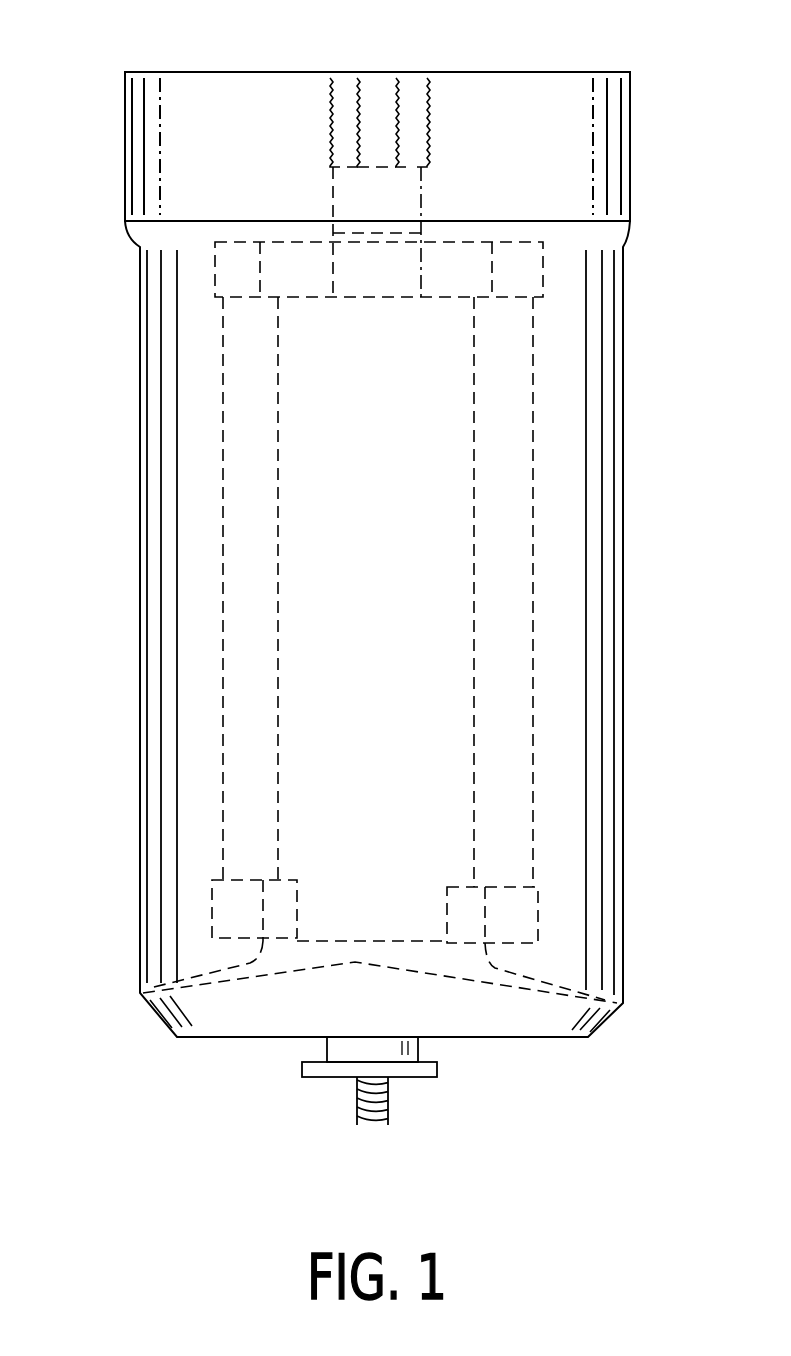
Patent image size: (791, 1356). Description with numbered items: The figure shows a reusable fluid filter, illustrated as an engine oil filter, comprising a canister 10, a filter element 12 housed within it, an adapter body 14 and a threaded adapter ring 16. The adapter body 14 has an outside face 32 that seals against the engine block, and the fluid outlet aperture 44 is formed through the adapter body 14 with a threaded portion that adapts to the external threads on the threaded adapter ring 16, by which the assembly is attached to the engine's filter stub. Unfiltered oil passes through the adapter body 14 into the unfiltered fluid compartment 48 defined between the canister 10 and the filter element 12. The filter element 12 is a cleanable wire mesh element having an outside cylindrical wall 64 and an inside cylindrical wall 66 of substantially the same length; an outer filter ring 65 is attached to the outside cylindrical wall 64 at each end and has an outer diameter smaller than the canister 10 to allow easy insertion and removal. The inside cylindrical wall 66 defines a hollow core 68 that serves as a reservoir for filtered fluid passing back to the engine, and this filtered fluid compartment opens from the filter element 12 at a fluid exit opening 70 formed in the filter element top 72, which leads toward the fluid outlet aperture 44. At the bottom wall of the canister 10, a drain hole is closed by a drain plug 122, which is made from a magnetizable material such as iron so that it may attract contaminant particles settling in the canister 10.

The canister 10 is at (140, 517).
The filter element 12 is at (515, 492).
The adapter body 14 is at (550, 90).
The threaded adapter ring 16 is at (412, 105).
The outside face 32 is at (213, 72).
The fluid outlet aperture 44 is at (428, 196).
The unfiltered fluid compartment 48 is at (177, 655).
The outside cylindrical wall 64 is at (223, 733).
The outer filter ring 65 is at (222, 903).
The inside cylindrical wall 66 is at (278, 800).
The hollow core 68 is at (310, 612).
The fluid exit opening 70 is at (378, 282).
The filter element top 72 is at (455, 297).
The drain plug 122 is at (418, 1048).